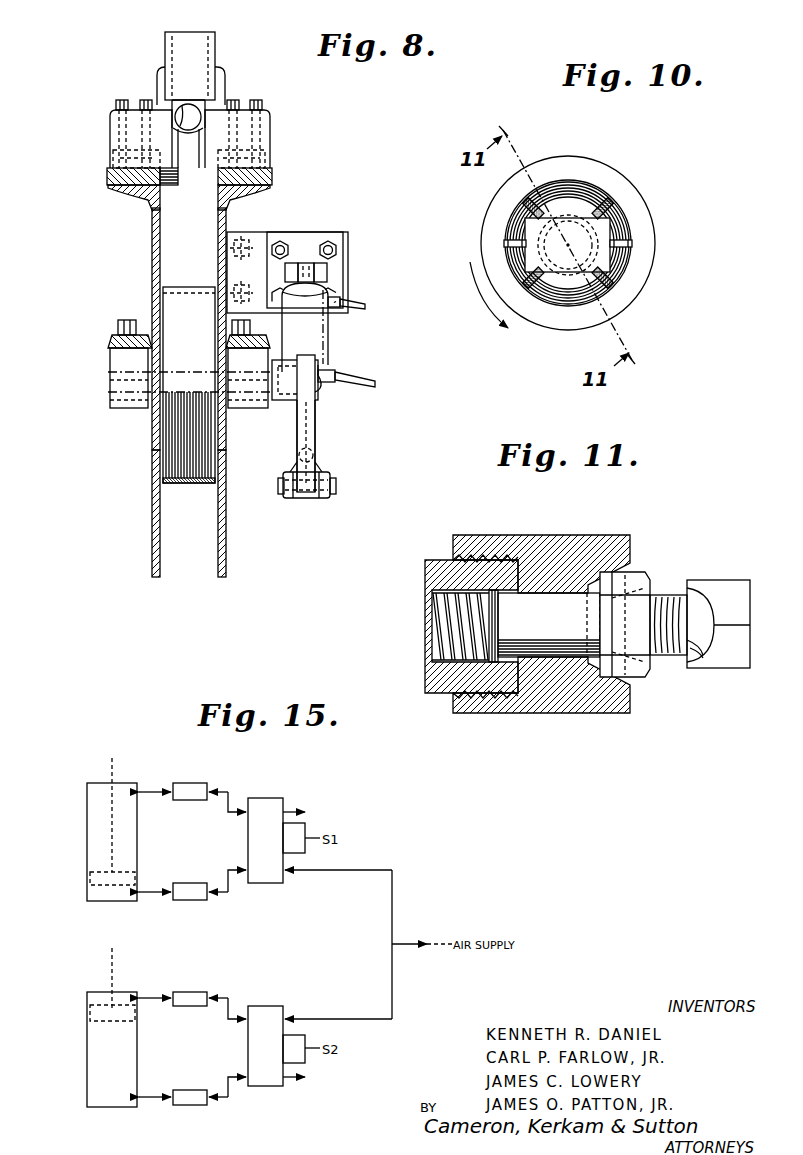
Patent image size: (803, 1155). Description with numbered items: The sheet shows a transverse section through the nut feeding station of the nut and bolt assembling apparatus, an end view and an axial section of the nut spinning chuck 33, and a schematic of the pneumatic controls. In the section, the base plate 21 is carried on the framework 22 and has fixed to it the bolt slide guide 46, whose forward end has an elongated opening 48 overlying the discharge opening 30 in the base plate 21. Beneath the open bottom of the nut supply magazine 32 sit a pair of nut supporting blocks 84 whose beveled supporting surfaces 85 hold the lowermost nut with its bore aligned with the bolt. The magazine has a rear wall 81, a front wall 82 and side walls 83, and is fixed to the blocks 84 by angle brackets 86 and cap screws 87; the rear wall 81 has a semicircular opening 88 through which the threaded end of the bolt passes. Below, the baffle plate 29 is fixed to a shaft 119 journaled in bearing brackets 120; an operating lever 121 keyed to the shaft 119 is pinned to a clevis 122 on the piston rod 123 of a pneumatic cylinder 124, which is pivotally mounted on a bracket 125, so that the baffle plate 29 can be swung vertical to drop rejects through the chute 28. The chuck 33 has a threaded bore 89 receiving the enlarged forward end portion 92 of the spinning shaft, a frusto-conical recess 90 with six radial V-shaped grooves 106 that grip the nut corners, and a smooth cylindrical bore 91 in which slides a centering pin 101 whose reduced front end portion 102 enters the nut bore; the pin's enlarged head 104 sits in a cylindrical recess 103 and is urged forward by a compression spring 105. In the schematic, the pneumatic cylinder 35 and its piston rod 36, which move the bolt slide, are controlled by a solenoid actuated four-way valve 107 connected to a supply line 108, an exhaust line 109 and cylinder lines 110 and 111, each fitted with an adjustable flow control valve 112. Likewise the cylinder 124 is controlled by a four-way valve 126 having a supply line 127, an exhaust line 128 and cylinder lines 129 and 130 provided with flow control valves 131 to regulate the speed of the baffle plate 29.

In FIG. 8, the base plate 21 is at (106, 178).
In FIG. 8, the framework 22 is at (152, 246).
In FIG. 8, the chute 28 is at (152, 532).
In FIG. 8, the baffle plate 29 is at (183, 306).
In FIG. 8, the opening 30 is at (196, 180).
In FIG. 8, the nut supply magazine 32 is at (146, 33).
In FIG. 10, the nut spinning chuck 33 is at (563, 168).
In FIG. 11, the nut spinning chuck 33 is at (537, 535).
In FIG. 15, the pneumatic cylinder 35 is at (92, 838).
In FIG. 15, the piston rod 36 is at (112, 768).
In FIG. 8, the bolt slide guide 46 is at (110, 155).
In FIG. 8, the opening 48 is at (216, 158).
In FIG. 8, the rear wall 81 is at (204, 115).
In FIG. 8, the front wall 82 is at (196, 46).
In FIG. 8, the side walls 83 is at (166, 100).
In FIG. 8, the nut supporting blocks 84 is at (160, 130).
In FIG. 8, the beveled supporting surfaces 85 is at (206, 122).
In FIG. 8, the angle brackets 86 is at (220, 76).
In FIG. 8, the cap screws 87 is at (118, 102).
In FIG. 8, the semicircular opening 88 is at (188, 148).
In FIG. 11, the threaded bore 89 is at (488, 700).
In FIG. 10, the frusto-conical recess 90 is at (612, 204).
In FIG. 11, the frusto-conical recess 90 is at (634, 686).
In FIG. 11, the smooth cylindrical bore 91 is at (546, 660).
In FIG. 11, the enlarged forward end portion 92 is at (436, 562).
In FIG. 11, the centering pin 101 is at (572, 634).
In FIG. 11, the reduced front end portion 102 is at (627, 598).
In FIG. 11, the cylindrical recess 103 is at (432, 660).
In FIG. 11, the enlarged head 104 is at (500, 610).
In FIG. 11, the compression spring 105 is at (430, 600).
In FIG. 10, the V-shaped grooves 106 is at (601, 302).
In FIG. 11, the V-shaped grooves 106 is at (620, 688).
In FIG. 15, the four-way valve 107 is at (258, 839).
In FIG. 15, the supply line 108 is at (328, 872).
In FIG. 15, the exhaust line 109 is at (294, 808).
In FIG. 15, the cylinder line 110 is at (230, 806).
In FIG. 15, the cylinder line 111 is at (232, 882).
In FIG. 15, the flow control valve 112 is at (190, 785).
In FIG. 8, the shaft 119 is at (185, 393).
In FIG. 8, the bearing brackets 120 is at (118, 380).
In FIG. 8, the operating lever 121 is at (304, 468).
In FIG. 8, the clevis 122 is at (318, 473).
In FIG. 8, the piston rod 123 is at (316, 420).
In FIG. 15, the piston rod 123 is at (112, 965).
In FIG. 8, the pneumatic cylinder 124 is at (329, 338).
In FIG. 15, the pneumatic cylinder 124 is at (97, 1062).
In FIG. 8, the bracket 125 is at (338, 262).
In FIG. 15, the four-way valve 126 is at (262, 1048).
In FIG. 15, the supply line 127 is at (330, 1019).
In FIG. 15, the exhaust line 128 is at (292, 1082).
In FIG. 8, the cylinder line 129 is at (360, 300).
In FIG. 15, the cylinder line 129 is at (232, 1090).
In FIG. 8, the cylinder line 130 is at (362, 387).
In FIG. 15, the cylinder line 130 is at (230, 1010).
In FIG. 15, the flow control valves 131 is at (188, 993).